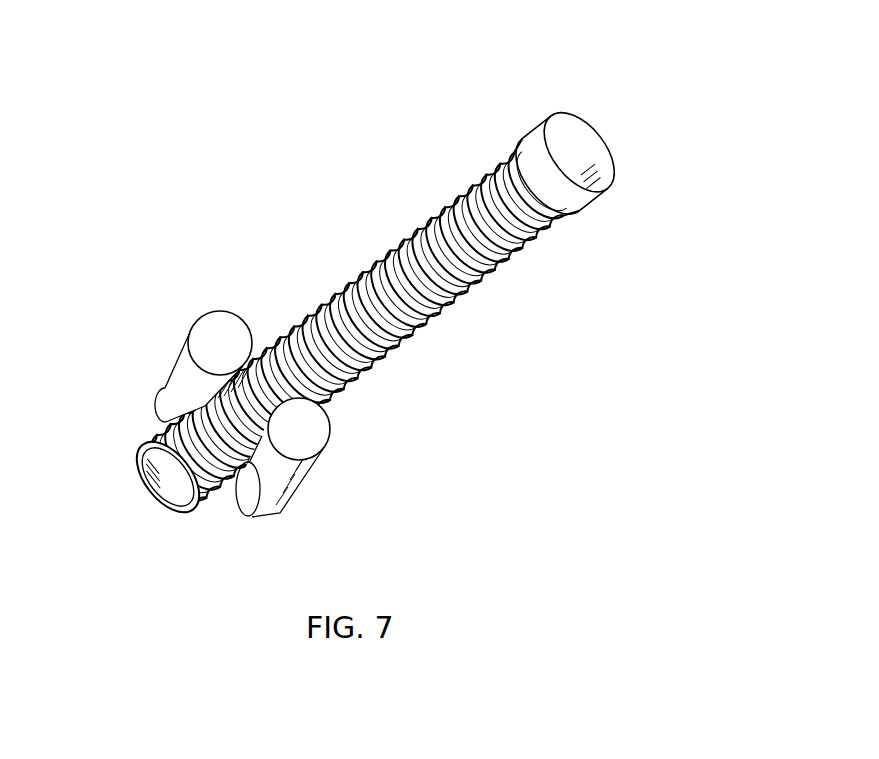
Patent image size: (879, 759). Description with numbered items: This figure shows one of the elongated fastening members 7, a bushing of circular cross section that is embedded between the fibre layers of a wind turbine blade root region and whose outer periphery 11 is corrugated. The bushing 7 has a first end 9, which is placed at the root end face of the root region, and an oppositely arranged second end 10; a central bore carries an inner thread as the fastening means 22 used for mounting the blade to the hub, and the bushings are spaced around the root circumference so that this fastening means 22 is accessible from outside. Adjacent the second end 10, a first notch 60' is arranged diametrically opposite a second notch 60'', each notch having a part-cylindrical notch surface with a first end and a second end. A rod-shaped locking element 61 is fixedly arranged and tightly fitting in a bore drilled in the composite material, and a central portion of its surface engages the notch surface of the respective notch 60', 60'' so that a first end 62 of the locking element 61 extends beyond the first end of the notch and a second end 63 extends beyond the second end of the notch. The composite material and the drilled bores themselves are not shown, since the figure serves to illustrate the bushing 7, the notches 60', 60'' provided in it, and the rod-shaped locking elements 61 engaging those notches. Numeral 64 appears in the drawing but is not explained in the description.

The elongated fastening member 7 is at (446, 262).
The first end 9 is at (609, 181).
The second end 10 is at (183, 452).
The outer periphery 11 is at (412, 335).
The fastening means 22 is at (587, 150).
The first notch 60' is at (166, 375).
The second notch 60'' is at (276, 508).
The rod-shaped locking element 61 is at (177, 378).
The first end 62 is at (239, 333).
The second end 63 is at (158, 414).
The clamp housing edge 64 is at (188, 338).